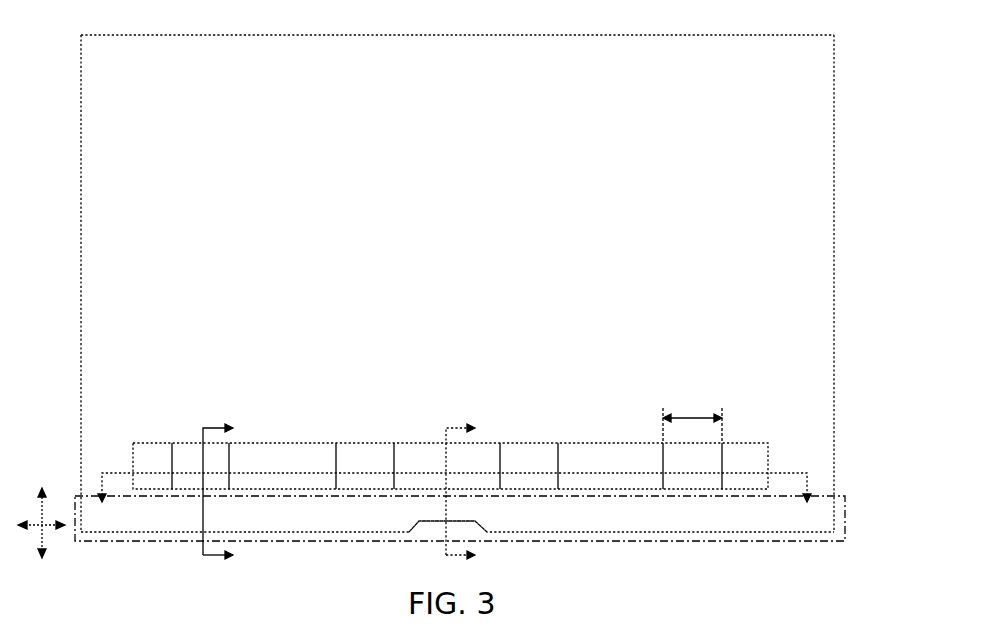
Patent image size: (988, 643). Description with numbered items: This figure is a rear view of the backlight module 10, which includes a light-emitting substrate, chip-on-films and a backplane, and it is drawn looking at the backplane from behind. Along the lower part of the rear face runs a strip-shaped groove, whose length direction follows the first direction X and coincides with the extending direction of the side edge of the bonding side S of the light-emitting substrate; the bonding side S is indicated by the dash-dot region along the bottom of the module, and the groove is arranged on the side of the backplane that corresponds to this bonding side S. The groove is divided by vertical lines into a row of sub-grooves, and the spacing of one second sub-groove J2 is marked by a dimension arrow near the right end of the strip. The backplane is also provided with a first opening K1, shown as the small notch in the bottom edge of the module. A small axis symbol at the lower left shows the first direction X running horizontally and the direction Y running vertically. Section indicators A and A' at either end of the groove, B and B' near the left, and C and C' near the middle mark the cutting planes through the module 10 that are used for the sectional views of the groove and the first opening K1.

The backlight module 10 is at (44, 30).
The second sub-groove J2 is at (690, 418).
The first opening K1 is at (430, 527).
The bonding side S is at (847, 528).
The section line A is at (454, 498).
The section line A' is at (784, 516).
The section line B is at (225, 490).
The section line B' is at (245, 556).
The section line C is at (467, 490).
The section line C' is at (486, 556).
The first direction X is at (44, 532).
The Y axis Y is at (46, 523).